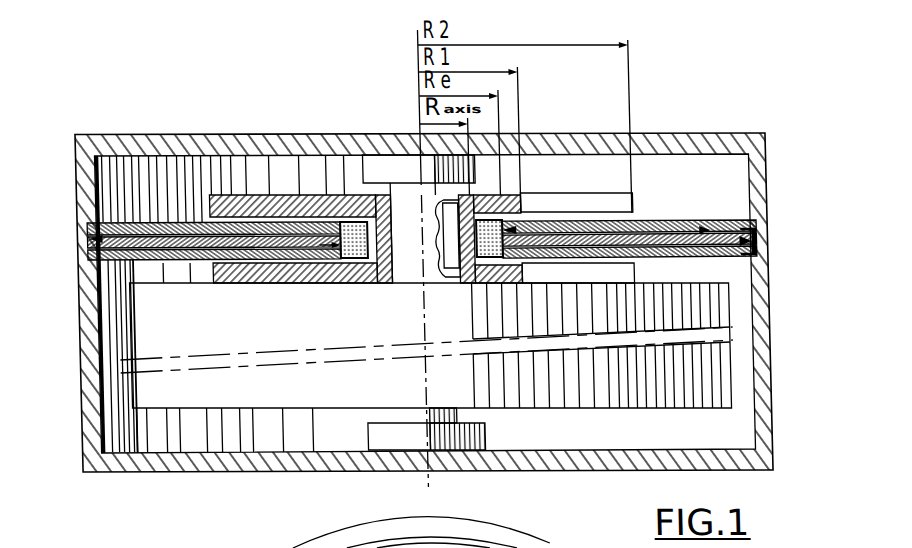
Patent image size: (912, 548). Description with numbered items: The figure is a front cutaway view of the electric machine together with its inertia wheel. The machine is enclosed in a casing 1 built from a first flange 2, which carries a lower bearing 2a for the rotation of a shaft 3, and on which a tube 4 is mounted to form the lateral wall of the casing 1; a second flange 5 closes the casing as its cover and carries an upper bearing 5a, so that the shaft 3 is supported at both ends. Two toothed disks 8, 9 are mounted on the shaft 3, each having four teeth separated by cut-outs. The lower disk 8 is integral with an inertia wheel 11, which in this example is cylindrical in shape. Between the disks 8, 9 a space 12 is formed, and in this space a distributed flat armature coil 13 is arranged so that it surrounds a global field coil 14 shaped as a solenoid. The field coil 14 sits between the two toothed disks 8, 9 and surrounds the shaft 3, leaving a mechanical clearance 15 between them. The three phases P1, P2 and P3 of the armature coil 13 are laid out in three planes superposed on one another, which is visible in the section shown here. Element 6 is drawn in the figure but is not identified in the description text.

The casing 1 is at (776, 236).
The first flange 2 is at (429, 485).
The lower bearing 2a is at (311, 410).
The shaft 3 is at (420, 288).
The tube 4 is at (780, 301).
The second flange 5 is at (420, 117).
The upper bearing 5a is at (394, 155).
The lower support bar 6 is at (259, 273).
The lower disk 8 is at (601, 269).
The toothed disk 9 is at (575, 182).
The inertia wheel 11 is at (97, 304).
The space 12 is at (283, 191).
The distributed flat armature coil 13 is at (224, 189).
The global field coil 14 is at (350, 209).
The mechanical clearance 15 is at (408, 263).
The phase P1 is at (653, 218).
The phase P2 is at (716, 218).
The phase P3 is at (630, 265).